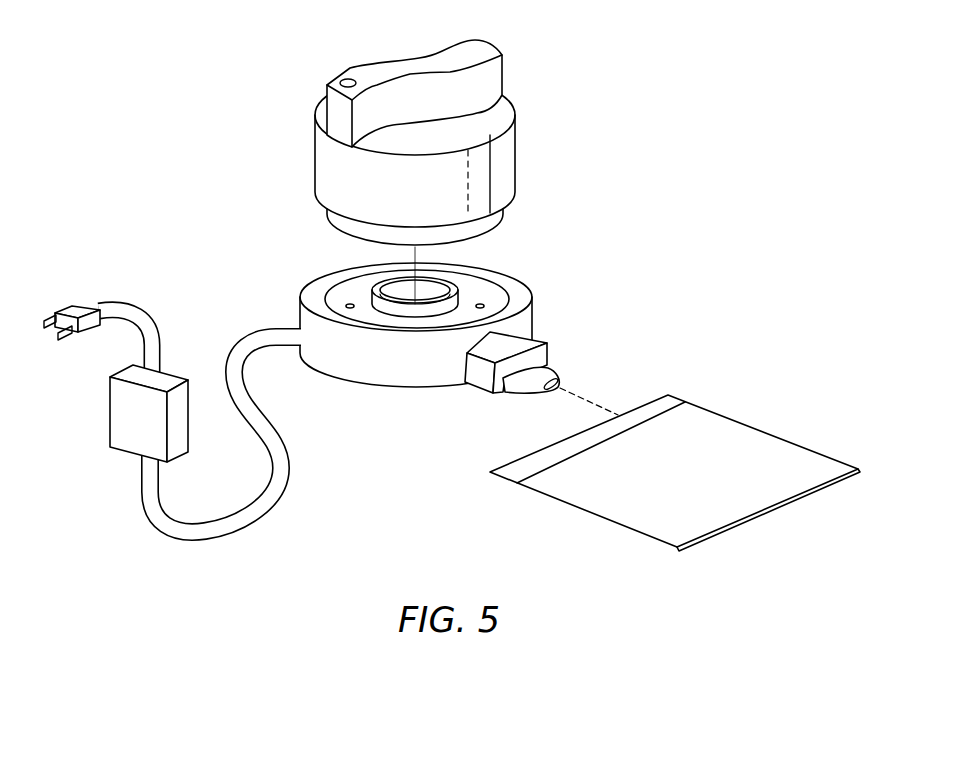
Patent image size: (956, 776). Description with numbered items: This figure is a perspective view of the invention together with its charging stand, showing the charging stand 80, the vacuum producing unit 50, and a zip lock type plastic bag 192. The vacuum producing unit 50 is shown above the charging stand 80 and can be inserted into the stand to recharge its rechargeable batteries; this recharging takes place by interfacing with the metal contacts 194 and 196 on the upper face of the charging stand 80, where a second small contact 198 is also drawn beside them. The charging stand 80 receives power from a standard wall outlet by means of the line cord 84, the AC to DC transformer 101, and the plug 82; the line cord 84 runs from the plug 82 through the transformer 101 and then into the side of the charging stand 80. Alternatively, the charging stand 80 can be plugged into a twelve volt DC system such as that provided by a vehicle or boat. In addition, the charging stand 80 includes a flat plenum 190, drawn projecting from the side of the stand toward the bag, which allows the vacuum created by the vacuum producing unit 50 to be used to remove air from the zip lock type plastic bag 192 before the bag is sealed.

The vacuum producing unit 50 is at (523, 37).
The charging stand 80 is at (532, 306).
The plug 82 is at (80, 310).
The line cord 84 is at (240, 337).
The AC to DC transformer 101 is at (130, 430).
The flat plenum 190 is at (553, 372).
The zip lock type plastic bag 192 is at (728, 447).
The metal contact 194 is at (376, 284).
The metal contact 196 is at (481, 304).
The contact pin 198 is at (350, 304).